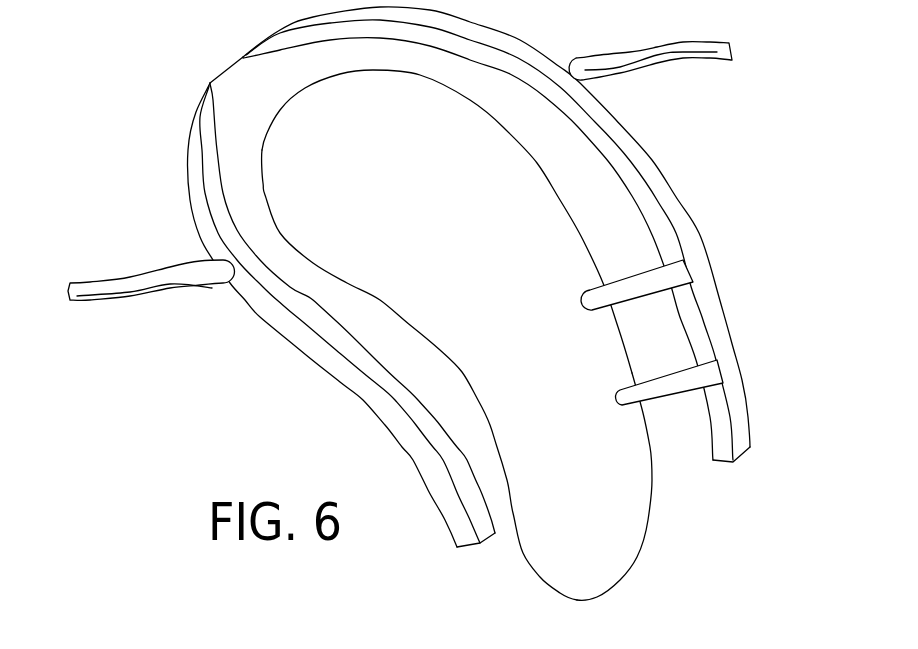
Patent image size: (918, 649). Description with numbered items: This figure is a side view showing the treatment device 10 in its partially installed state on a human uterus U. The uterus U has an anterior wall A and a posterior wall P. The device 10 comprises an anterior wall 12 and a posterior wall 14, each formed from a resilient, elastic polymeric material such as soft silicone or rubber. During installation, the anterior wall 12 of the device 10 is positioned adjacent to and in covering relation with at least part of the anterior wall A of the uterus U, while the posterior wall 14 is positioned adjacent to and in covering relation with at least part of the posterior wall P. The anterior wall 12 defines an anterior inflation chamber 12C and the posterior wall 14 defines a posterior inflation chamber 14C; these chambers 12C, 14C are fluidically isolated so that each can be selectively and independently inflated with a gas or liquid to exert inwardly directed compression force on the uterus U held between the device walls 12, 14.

The treatment device 10 is at (433, 277).
The anterior wall 12 is at (281, 315).
The anterior inflation chamber 12C is at (280, 290).
The posterior wall 14 is at (523, 234).
The posterior inflation chamber 14C is at (600, 137).
The uterus U is at (557, 233).
The anterior wall of the uterus A is at (470, 387).
The posterior wall of the uterus P is at (650, 507).